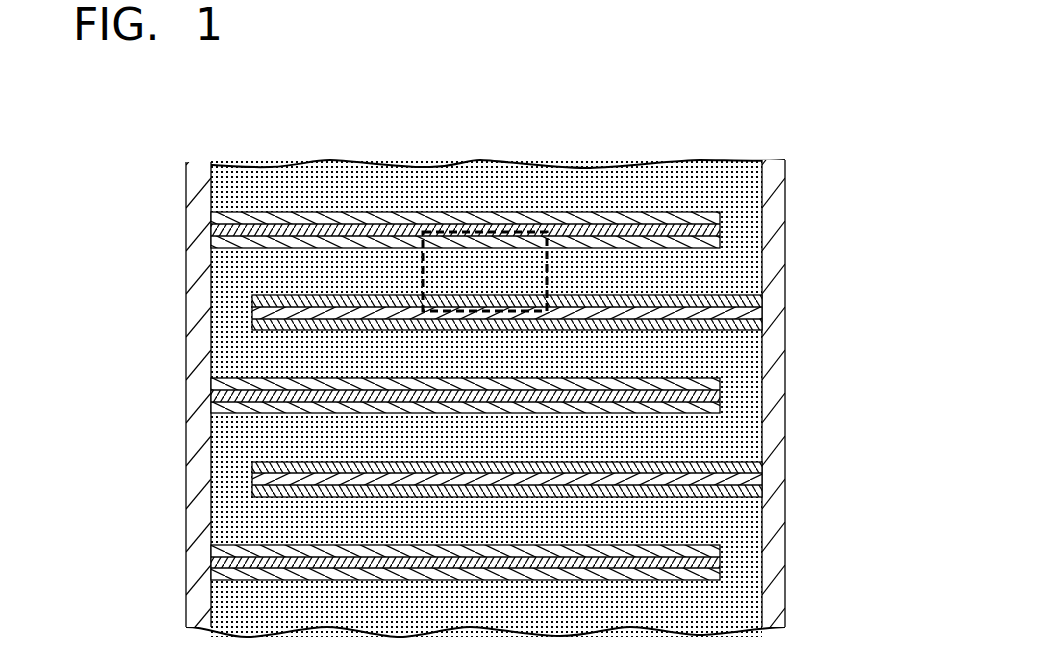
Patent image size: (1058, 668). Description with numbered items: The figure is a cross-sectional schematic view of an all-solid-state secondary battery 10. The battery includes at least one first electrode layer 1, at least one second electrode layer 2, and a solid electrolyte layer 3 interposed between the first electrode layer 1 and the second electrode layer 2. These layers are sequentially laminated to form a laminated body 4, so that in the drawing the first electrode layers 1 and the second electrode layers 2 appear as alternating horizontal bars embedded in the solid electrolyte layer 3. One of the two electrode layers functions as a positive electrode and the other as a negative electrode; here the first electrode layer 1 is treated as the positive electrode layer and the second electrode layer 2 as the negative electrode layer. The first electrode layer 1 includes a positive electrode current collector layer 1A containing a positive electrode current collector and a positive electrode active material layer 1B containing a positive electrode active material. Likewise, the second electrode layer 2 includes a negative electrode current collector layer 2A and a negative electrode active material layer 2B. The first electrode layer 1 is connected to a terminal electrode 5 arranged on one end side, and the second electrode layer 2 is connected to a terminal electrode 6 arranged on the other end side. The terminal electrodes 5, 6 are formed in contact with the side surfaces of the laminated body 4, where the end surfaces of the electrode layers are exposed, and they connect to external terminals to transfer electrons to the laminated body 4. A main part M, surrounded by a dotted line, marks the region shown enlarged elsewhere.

The all-solid-state secondary battery 10 is at (485, 346).
The first electrode layer 1 is at (384, 386).
The positive electrode current collector layer 1A is at (212, 230).
The positive electrode active material layer 1B is at (212, 218).
The second electrode layer 2 is at (587, 387).
The negative electrode current collector layer 2A is at (762, 312).
The negative electrode active material layer 2B is at (762, 298).
The solid electrolyte layer 3 is at (730, 355).
The laminated body 4 is at (763, 252).
The terminal electrode 5 is at (199, 324).
The terminal electrode 6 is at (773, 575).
The main part M is at (493, 232).